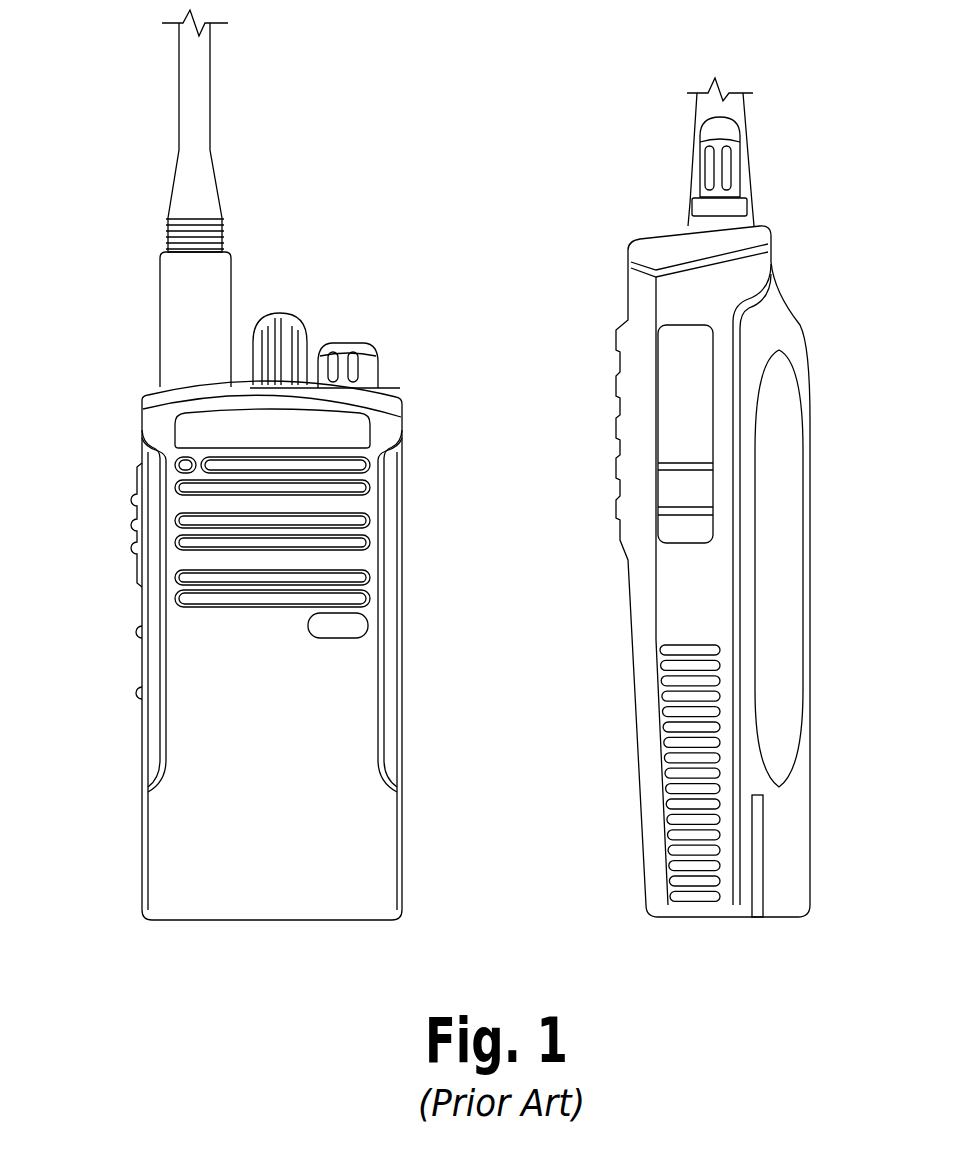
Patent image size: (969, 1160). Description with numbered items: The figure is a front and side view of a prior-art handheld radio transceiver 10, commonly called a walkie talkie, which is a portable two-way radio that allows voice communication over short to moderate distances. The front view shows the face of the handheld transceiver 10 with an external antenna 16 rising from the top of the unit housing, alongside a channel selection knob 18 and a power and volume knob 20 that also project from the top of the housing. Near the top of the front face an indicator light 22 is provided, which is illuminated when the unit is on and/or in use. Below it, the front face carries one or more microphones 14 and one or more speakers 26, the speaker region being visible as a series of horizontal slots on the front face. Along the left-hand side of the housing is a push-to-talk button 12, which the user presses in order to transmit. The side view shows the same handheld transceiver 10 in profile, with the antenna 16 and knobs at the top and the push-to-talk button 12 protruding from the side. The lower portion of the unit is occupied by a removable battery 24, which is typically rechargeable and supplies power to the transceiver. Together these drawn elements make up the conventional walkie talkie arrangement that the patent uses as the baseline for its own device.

The handheld transceiver 10 is at (143, 845).
The push-to-talk button 12 is at (137, 525).
The microphone 14 is at (176, 463).
The antenna 16 is at (207, 97).
The channel selection knob 18 is at (286, 326).
The power and volume knob 20 is at (365, 347).
The indicator light 22 is at (322, 393).
The removable battery 24 is at (800, 320).
The speaker 26 is at (375, 523).